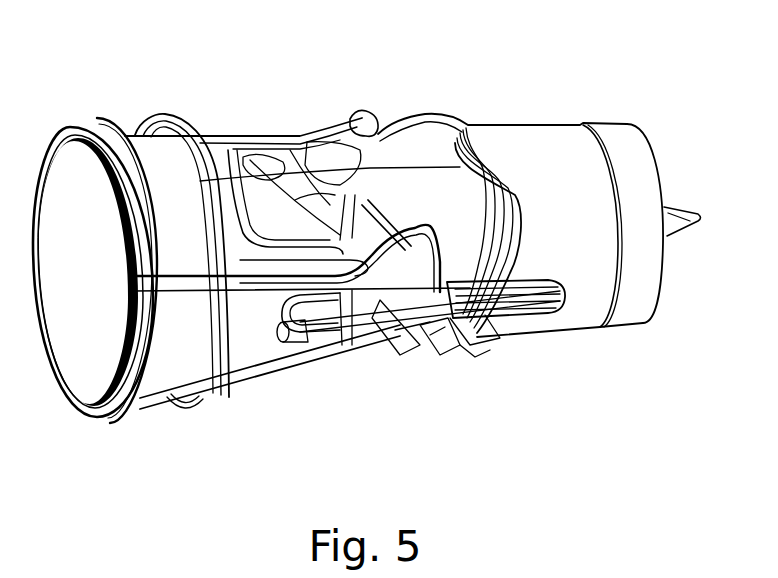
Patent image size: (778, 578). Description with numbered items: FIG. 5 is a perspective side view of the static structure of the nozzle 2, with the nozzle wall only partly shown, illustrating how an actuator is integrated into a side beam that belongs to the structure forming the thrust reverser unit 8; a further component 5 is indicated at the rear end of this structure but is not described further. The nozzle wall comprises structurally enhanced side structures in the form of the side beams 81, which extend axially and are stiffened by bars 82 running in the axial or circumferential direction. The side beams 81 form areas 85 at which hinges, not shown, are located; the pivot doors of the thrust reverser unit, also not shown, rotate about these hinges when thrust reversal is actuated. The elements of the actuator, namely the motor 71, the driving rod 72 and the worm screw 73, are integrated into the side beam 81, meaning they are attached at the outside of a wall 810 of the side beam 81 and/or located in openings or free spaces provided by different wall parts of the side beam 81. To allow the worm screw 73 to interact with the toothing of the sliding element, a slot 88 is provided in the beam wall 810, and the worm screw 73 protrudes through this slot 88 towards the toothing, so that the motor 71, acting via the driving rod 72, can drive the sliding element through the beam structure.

The nozzle 2 is at (289, 110).
The areas 85 is at (376, 118).
The housing 8 is at (392, 111).
The pin 5 is at (673, 210).
The bars 82 is at (201, 282).
The side beams 81 is at (264, 356).
The motor 71 is at (304, 336).
The driving rod 72 is at (360, 327).
The wall 810 is at (410, 358).
The worm screw 73 is at (432, 366).
The slot 88 is at (465, 361).